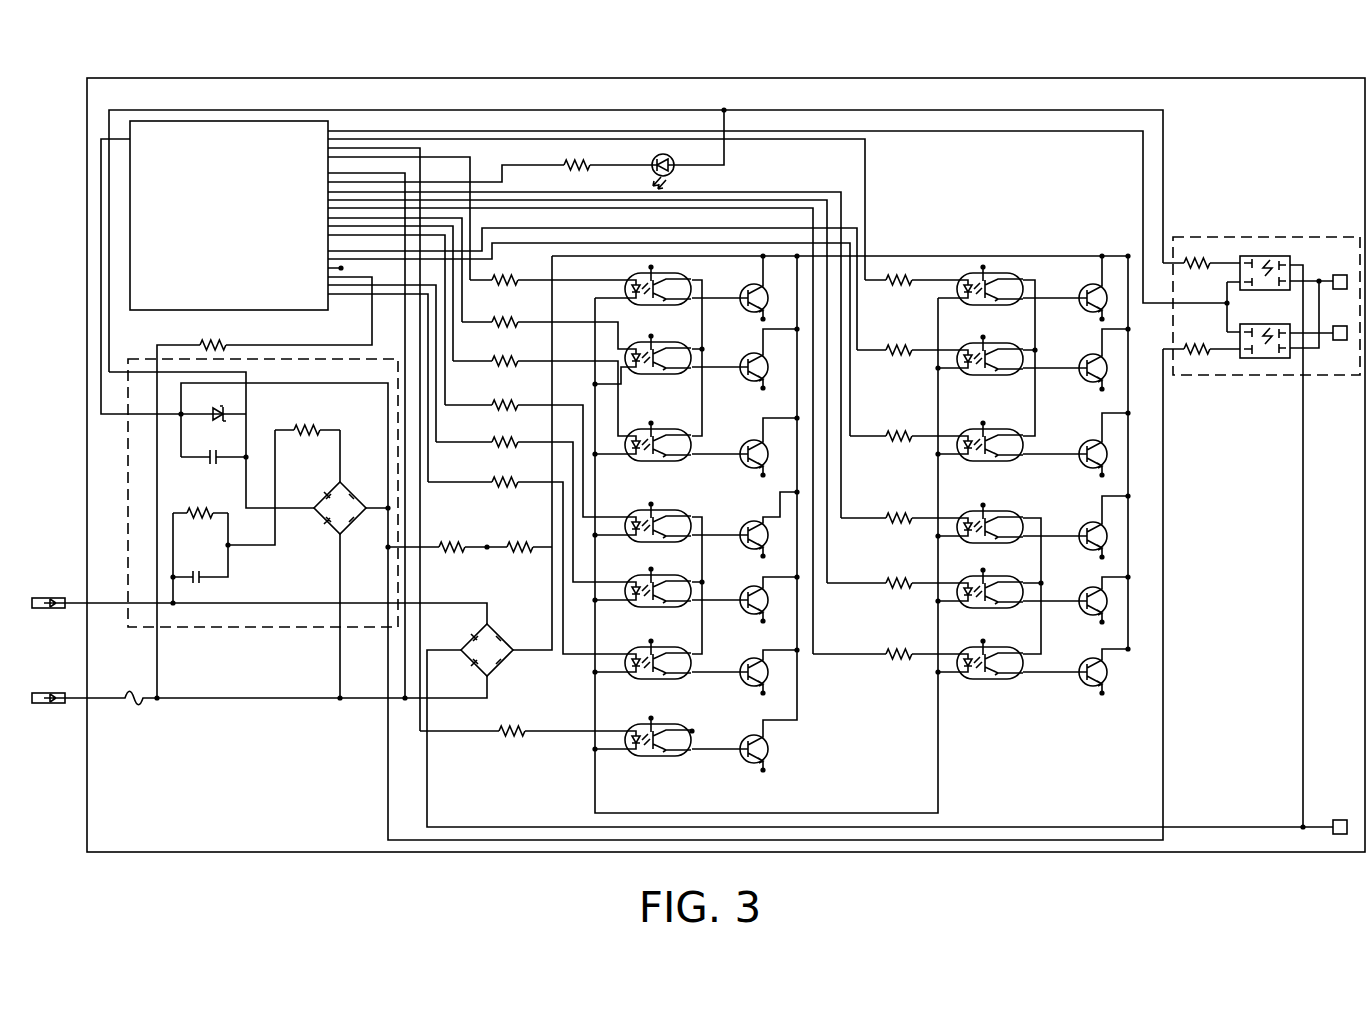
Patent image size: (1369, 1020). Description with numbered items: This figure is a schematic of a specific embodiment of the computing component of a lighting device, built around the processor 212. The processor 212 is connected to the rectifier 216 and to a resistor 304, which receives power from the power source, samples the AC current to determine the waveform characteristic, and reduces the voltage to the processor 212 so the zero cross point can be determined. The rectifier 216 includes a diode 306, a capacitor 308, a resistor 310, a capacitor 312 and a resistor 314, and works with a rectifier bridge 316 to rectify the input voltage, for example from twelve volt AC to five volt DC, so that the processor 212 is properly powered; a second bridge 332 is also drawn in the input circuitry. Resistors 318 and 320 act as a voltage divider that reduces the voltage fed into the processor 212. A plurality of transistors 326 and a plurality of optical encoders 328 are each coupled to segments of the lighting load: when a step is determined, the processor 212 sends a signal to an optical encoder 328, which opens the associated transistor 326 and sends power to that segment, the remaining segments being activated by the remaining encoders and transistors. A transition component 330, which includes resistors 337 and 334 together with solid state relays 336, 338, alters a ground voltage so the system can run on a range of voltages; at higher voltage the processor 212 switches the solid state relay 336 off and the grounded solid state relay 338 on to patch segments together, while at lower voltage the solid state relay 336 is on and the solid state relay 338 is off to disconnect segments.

The processor 212 is at (212, 230).
The rectifier 216 is at (241, 628).
The resistor 304 is at (1062, 78).
The diode 306 is at (224, 407).
The capacitor 308 is at (212, 462).
The resistor 310 is at (204, 520).
The capacitor 312 is at (201, 580).
The resistor 314 is at (306, 428).
The rectifier bridge 316 is at (331, 546).
The resistor 318 is at (458, 552).
The resistor 320 is at (521, 543).
The transistor 326 is at (757, 310).
The optical encoder 328 is at (624, 286).
The transition component 330 is at (1228, 237).
The bridge rectifier 332 is at (508, 683).
The resistor 334 is at (1196, 360).
The solid state relay 336 is at (1283, 256).
The resistor 337 is at (1194, 254).
The solid state relay 338 is at (1278, 358).